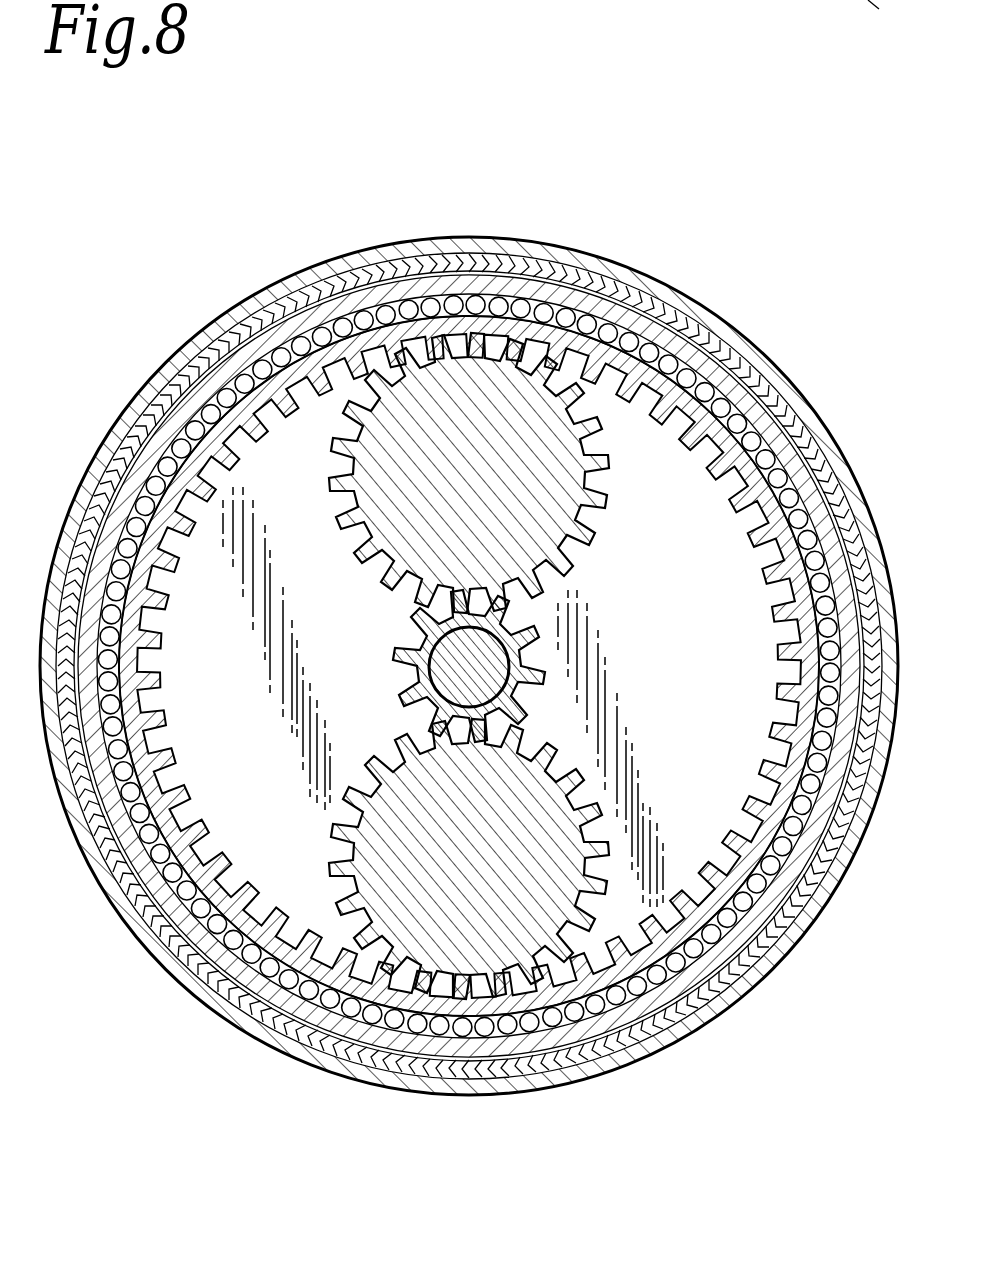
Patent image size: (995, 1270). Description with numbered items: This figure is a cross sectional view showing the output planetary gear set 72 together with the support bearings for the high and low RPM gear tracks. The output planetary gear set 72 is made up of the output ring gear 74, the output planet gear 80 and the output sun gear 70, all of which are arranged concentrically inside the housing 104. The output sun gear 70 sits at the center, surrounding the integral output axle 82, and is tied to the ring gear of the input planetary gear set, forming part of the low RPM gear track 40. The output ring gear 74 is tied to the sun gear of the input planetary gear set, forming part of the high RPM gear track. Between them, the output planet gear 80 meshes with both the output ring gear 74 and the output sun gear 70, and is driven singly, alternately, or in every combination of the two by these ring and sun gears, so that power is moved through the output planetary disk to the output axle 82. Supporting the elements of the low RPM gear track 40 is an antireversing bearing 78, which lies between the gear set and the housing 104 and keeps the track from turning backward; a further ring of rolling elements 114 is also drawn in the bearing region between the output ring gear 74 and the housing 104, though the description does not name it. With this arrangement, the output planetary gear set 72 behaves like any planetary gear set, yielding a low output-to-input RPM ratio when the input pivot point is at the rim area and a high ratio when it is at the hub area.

The output planetary gear set 72 is at (130, 305).
The housing 104 is at (282, 1040).
The antireversing bearing 78 is at (210, 977).
The low RPM gear track 40 is at (183, 930).
The bearing balls 114 is at (207, 887).
The output ring gear 74 is at (167, 762).
The output planet gear 80 is at (380, 467).
The output sun gear 70 is at (407, 697).
The output axle 82 is at (460, 653).